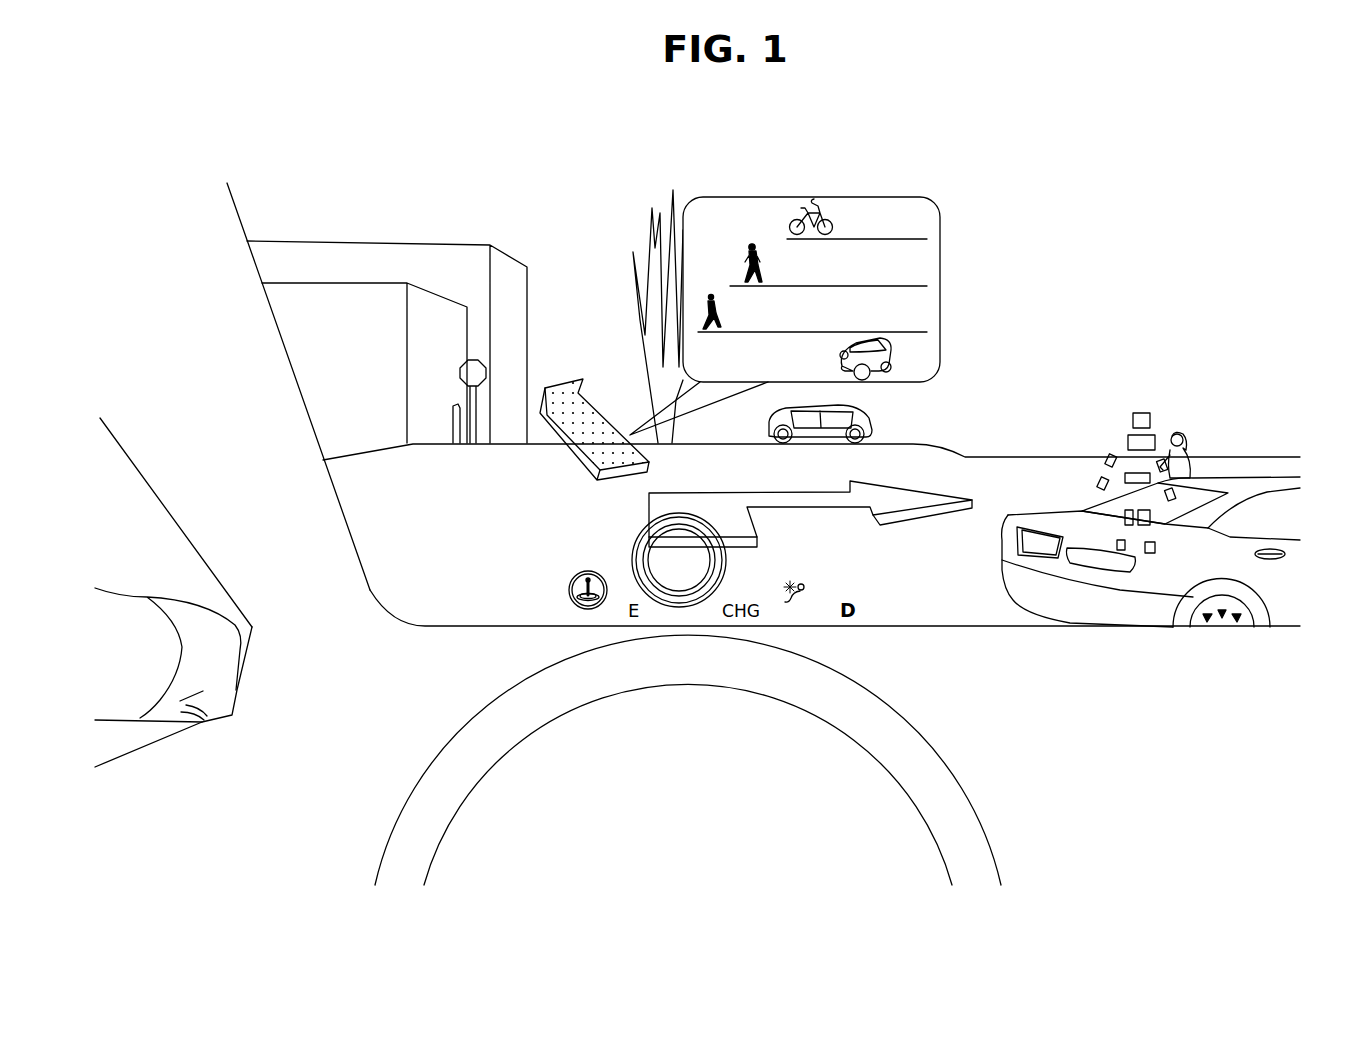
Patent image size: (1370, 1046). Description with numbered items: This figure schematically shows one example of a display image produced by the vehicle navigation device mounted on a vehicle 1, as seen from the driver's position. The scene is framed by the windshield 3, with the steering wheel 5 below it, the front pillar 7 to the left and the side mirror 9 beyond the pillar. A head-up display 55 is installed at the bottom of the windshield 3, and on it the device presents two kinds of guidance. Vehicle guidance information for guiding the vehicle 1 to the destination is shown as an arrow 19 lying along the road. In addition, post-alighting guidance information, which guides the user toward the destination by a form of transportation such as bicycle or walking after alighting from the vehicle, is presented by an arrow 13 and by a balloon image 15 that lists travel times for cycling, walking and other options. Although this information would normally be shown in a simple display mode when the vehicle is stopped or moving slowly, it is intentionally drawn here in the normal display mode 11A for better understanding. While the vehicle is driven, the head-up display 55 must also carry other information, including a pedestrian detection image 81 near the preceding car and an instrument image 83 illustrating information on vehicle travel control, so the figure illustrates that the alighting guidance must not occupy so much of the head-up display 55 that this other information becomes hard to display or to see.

The vehicle 1 is at (1258, 705).
The windshield 3 is at (1243, 397).
The steering wheel 5 is at (982, 838).
The front pillar 7 is at (190, 473).
The side mirror 9 is at (138, 690).
The normal display mode 11A is at (833, 289).
The arrow 13 is at (558, 380).
The balloon image 15 is at (942, 277).
The arrow 19 is at (910, 495).
The head-up display 55 is at (478, 515).
The pedestrian detection image 81 is at (1142, 412).
The instrument image 83 is at (795, 607).